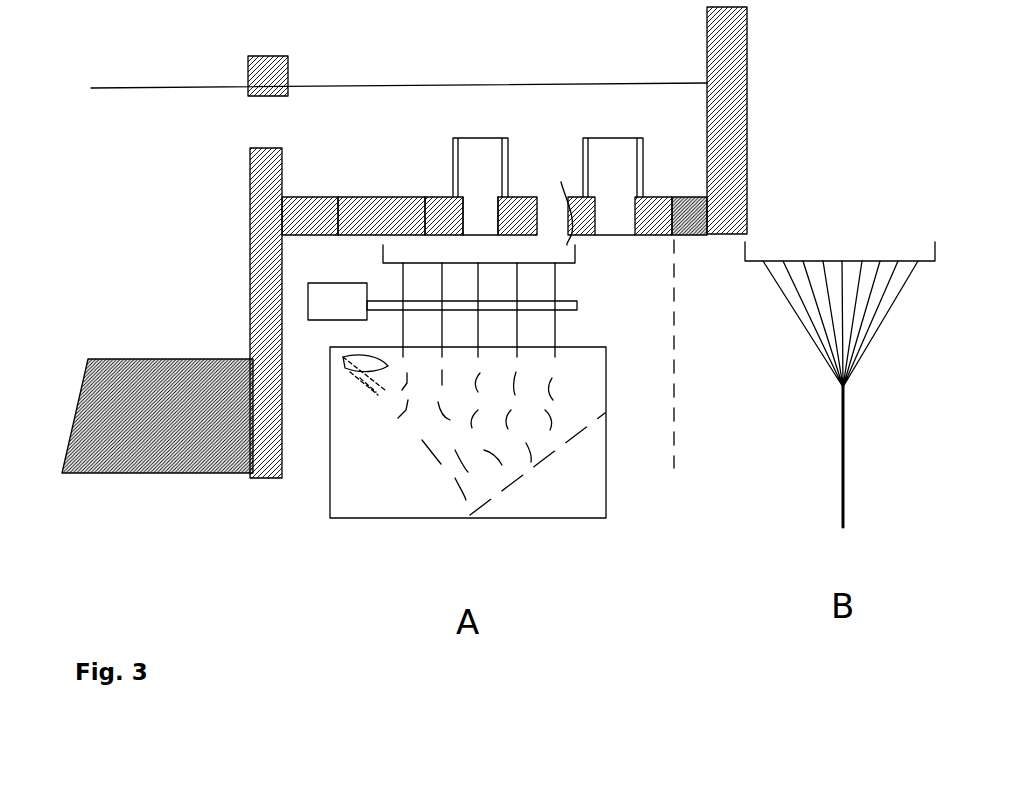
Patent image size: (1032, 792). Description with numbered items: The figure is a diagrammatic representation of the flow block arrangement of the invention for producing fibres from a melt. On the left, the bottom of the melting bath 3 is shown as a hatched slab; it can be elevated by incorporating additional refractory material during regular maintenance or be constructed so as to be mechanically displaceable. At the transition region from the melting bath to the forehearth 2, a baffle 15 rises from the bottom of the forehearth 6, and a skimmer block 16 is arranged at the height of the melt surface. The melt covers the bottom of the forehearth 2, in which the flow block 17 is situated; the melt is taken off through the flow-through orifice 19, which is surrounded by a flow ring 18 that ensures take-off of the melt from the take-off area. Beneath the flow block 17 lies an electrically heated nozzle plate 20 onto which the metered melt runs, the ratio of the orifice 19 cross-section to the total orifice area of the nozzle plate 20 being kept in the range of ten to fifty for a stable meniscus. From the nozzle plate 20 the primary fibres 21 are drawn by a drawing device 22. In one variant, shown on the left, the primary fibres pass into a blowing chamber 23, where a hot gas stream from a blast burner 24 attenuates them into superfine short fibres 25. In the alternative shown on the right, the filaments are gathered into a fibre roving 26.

The forehearth 2 is at (680, 130).
The bottom of the melting bath 3 is at (224, 437).
The bottom of the forehearth 6 is at (695, 212).
The baffle 15 is at (265, 167).
The skimmer block 16 is at (270, 65).
The flow block 17 is at (440, 208).
The flow ring 18 is at (455, 157).
The flow-through orifice 19 is at (473, 222).
The nozzle plate 20 is at (745, 261).
The primary fibres 21 is at (782, 293).
The drawing device 22 is at (362, 302).
The blowing chamber 23 is at (380, 452).
The blast burner 24 is at (363, 360).
The superfine short fibres 25 is at (498, 462).
The fibre roving 26 is at (840, 463).